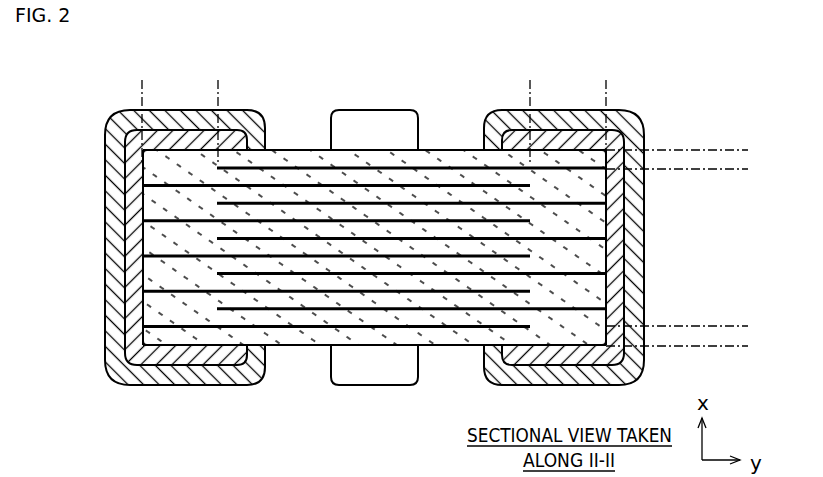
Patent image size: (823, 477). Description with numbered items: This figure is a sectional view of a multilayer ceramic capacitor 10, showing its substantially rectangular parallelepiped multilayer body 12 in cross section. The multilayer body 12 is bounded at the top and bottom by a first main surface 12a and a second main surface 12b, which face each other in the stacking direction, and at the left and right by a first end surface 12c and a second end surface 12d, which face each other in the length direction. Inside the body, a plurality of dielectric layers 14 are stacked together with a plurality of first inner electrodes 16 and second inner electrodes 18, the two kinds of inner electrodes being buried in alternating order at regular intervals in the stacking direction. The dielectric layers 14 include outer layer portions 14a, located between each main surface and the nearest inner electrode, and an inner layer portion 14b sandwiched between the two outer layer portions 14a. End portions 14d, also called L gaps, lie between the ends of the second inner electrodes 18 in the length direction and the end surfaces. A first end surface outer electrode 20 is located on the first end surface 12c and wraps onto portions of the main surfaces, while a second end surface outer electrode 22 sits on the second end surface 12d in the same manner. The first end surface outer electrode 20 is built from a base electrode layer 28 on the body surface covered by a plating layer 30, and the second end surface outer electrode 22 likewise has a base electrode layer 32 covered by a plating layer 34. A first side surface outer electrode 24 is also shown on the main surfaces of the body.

The multilayer ceramic capacitor 10 is at (92, 86).
The multilayer body 12 is at (435, 147).
The first main surface 12a is at (320, 147).
The second main surface 12b is at (315, 347).
The first end surface 12c is at (143, 305).
The second end surface 12d is at (610, 300).
The dielectric layers 14 is at (310, 198).
The outer layer portions 14a is at (737, 124).
The inner layer portion 14b is at (737, 169).
The end portions 14d is at (218, 85).
The first inner electrodes 16 is at (313, 257).
The second inner electrodes 18 is at (480, 310).
The first end surface outer electrode 20 is at (147, 247).
The second end surface outer electrode 22 is at (602, 247).
The first side surface outer electrode 24 is at (372, 110).
The base electrode layer 28 is at (135, 276).
The plating layer 30 is at (118, 238).
The base electrode layer 32 is at (630, 265).
The plating layer 34 is at (632, 235).